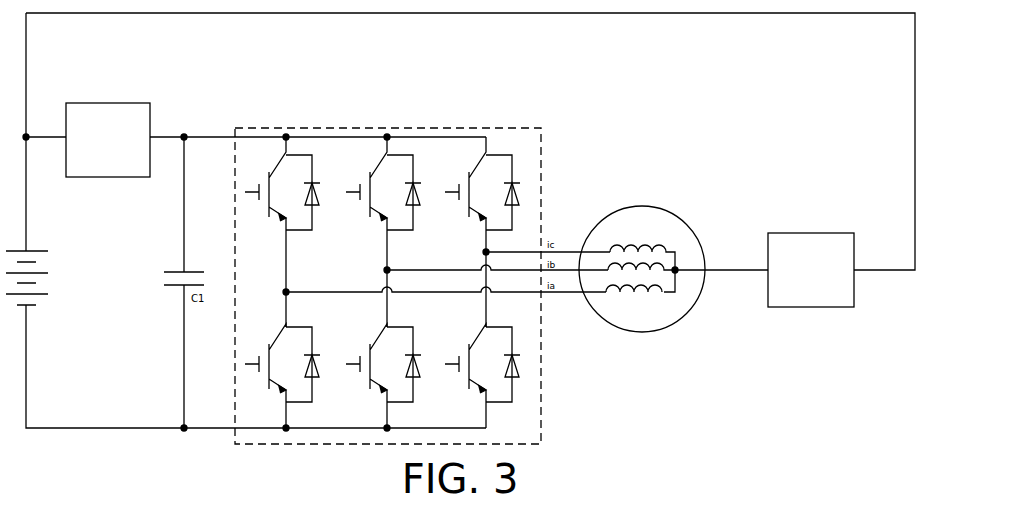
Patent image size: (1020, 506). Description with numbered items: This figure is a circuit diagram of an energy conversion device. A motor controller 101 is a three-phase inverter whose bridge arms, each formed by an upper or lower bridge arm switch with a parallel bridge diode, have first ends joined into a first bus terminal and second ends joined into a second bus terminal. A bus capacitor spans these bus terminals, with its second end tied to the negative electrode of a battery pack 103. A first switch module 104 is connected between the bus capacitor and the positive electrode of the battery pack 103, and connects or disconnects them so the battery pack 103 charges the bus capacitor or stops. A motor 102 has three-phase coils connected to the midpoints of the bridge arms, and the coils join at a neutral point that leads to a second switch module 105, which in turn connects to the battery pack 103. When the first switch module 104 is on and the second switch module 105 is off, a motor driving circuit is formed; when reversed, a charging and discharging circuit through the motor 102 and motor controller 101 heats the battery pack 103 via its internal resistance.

The motor controller 101 is at (388, 130).
The motor 102 is at (673, 214).
The battery pack 103 is at (30, 249).
The first switch module 104 is at (108, 103).
The second switch module 105 is at (808, 233).